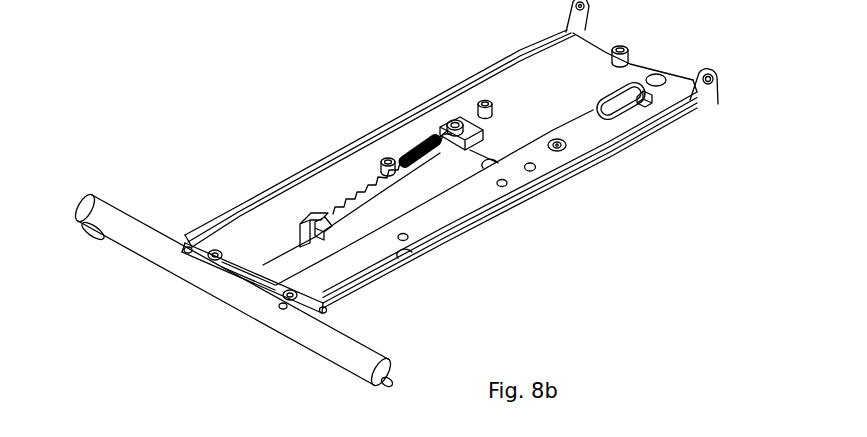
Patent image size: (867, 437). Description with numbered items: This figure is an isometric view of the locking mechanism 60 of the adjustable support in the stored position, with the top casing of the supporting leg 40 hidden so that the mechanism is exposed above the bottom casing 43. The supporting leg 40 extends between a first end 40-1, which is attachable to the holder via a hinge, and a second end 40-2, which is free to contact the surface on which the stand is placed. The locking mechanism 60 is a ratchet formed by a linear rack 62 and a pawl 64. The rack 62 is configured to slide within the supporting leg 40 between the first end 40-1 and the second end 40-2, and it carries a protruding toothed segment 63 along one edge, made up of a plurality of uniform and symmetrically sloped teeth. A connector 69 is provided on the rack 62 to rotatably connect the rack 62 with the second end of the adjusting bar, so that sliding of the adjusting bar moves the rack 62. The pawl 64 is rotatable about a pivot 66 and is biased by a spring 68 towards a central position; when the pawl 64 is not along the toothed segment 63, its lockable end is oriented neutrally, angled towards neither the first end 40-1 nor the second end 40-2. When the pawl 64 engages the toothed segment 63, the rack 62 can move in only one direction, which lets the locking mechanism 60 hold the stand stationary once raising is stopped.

The supporting leg 40 is at (657, 132).
The first end of the supporting leg 40-1 is at (708, 96).
The second end of the supporting leg 40-2 is at (263, 278).
The bottom casing 43 is at (583, 57).
The locking mechanism 60 is at (512, 240).
The linear rack 62 is at (360, 223).
The toothed segment 63 is at (362, 200).
The pawl 64 is at (467, 132).
The pivot 66 is at (452, 120).
The spring 68 is at (410, 147).
The connector 69 is at (317, 217).